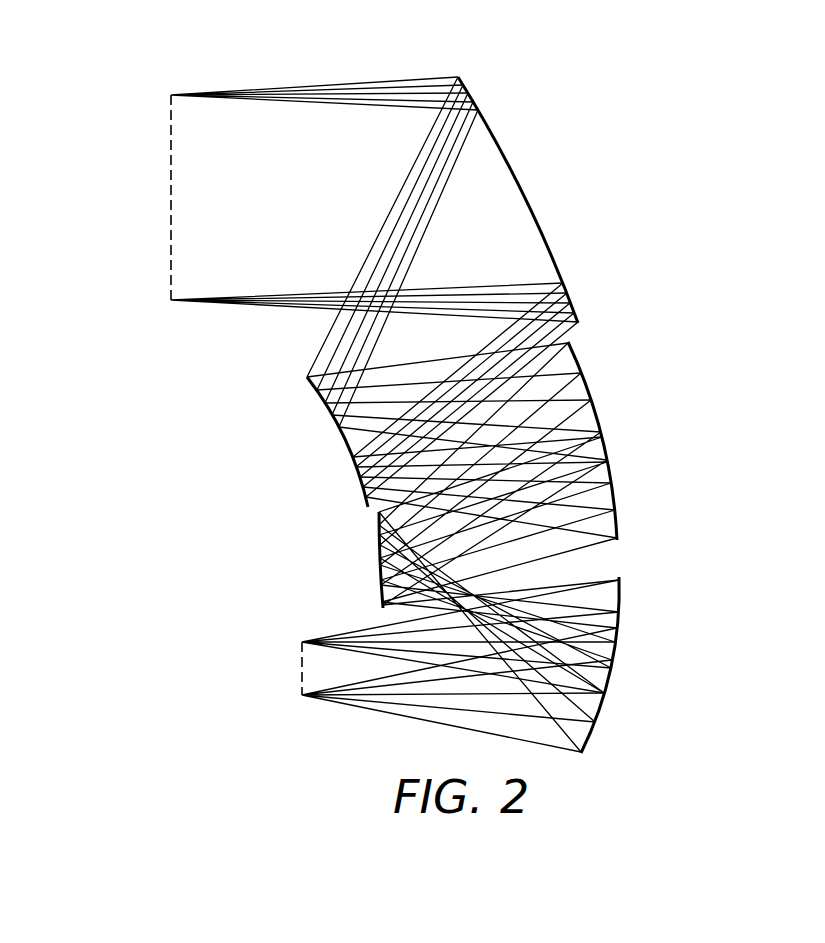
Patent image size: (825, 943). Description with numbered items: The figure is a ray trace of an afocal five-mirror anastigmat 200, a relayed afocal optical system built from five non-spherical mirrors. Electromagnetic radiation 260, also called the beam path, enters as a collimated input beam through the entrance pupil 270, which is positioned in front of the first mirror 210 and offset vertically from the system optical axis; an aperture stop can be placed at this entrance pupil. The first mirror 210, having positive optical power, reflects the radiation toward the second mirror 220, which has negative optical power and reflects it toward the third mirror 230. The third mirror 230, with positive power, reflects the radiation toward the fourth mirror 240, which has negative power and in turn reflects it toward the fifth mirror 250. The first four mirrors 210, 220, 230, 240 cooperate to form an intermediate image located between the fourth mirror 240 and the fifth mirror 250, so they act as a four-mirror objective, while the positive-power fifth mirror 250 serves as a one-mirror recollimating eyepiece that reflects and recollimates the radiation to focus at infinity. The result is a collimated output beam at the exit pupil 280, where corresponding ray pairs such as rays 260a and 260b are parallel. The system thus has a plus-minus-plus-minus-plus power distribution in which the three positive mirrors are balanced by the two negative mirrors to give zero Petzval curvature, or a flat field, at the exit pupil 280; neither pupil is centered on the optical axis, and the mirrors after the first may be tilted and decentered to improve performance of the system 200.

The afocal five-mirror anastigmat 200 is at (712, 200).
The first mirror 210 is at (520, 185).
The second mirror 220 is at (348, 444).
The third mirror 230 is at (598, 413).
The fourth mirror 240 is at (380, 558).
The fifth mirror 250 is at (612, 655).
The electromagnetic radiation 260 is at (340, 83).
The ray 260a is at (335, 635).
The ray 260b is at (332, 688).
The entrance pupil 270 is at (171, 208).
The exit pupil 280 is at (302, 687).